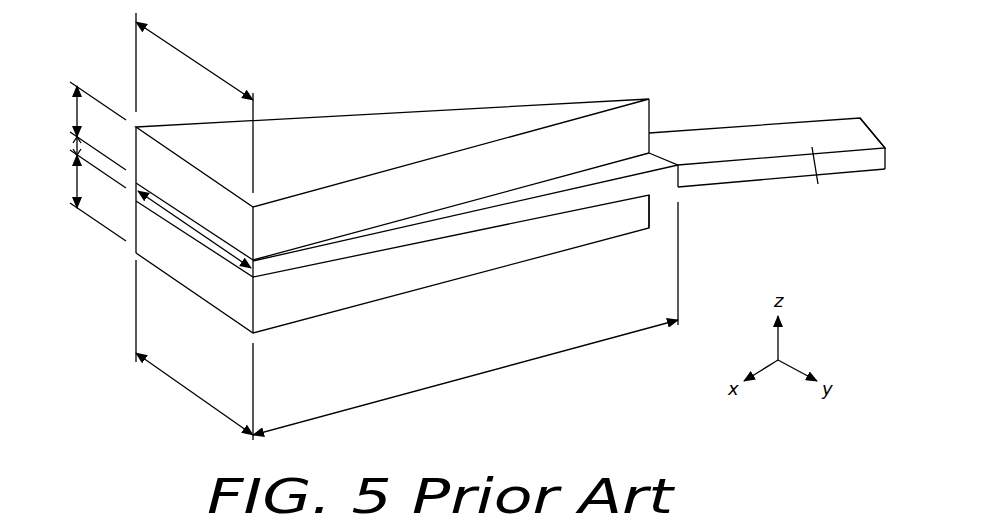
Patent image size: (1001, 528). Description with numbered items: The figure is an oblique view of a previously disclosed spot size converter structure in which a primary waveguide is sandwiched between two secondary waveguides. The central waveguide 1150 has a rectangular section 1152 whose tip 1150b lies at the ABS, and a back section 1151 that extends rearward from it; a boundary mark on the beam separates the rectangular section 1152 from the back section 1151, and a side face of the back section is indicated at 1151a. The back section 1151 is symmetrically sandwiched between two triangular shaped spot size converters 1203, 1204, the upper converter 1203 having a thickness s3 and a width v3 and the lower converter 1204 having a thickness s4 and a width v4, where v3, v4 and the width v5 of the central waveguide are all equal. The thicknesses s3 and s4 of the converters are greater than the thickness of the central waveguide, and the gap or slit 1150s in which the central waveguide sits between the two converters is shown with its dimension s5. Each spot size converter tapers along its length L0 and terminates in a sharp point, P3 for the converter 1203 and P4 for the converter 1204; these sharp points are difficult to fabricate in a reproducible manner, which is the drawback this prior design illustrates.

The spot size converter 1203 is at (362, 137).
The spot size converter 1204 is at (336, 298).
The central waveguide 1150 is at (857, 185).
The tip 1150b is at (877, 131).
The slit between blocks 1150s is at (185, 233).
The back section 1151 is at (537, 205).
The end face of lower layer 1151a is at (680, 174).
The rectangular section 1152 is at (827, 182).
The sharp point P3 is at (650, 112).
The sharp point P4 is at (650, 212).
The width v3 is at (194, 103).
The width v4 is at (194, 350).
The width v5 is at (194, 226).
The thickness s3 is at (84, 126).
The thickness s4 is at (84, 195).
The thickness s5 is at (61, 145).
The length L0 is at (465, 318).